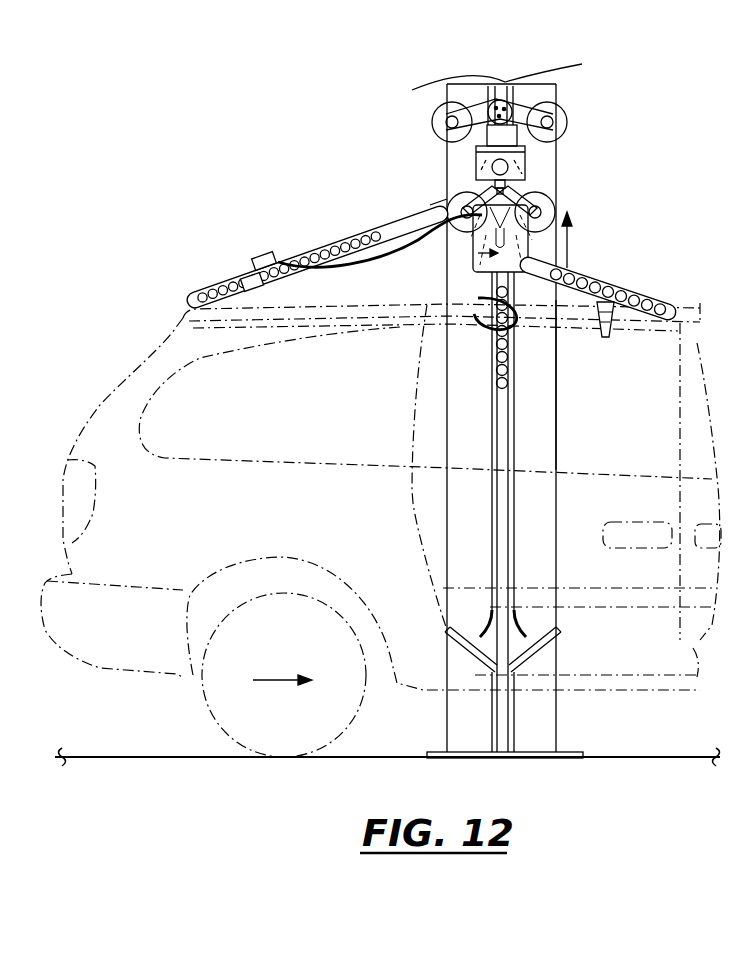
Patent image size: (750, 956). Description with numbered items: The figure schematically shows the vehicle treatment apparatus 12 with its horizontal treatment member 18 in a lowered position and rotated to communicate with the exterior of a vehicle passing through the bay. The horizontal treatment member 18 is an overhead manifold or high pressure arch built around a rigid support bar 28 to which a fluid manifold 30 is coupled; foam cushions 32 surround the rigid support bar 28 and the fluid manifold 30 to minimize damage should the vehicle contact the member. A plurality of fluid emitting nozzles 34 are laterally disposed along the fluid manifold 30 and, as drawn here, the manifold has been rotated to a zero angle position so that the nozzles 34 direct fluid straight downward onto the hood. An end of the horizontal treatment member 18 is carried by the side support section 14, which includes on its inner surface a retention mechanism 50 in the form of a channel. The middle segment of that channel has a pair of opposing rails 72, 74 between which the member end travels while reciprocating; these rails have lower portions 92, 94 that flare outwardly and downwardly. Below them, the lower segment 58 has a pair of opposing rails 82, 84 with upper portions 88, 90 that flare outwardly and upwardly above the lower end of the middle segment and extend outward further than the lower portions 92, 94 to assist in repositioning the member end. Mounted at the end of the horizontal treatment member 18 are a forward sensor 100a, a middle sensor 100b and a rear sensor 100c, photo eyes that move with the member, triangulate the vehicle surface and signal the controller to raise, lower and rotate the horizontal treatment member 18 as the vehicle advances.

The vehicle treatment apparatus 12 is at (552, 177).
The side support section 14 is at (548, 393).
The horizontal treatment member 18 is at (542, 156).
The rigid support bar 28 is at (504, 130).
The fluid manifold 30 is at (512, 172).
The foam cushions 32 is at (442, 113).
The fluid emitting nozzles 34 is at (434, 214).
The retention mechanism 50 is at (534, 440).
The lower segment 58 is at (517, 708).
The opposing rail 72 is at (492, 553).
The opposing rail 74 is at (518, 561).
The opposing rail 82 is at (492, 727).
The opposing rail 84 is at (517, 735).
The upper portion 88 is at (463, 655).
The upper portion 90 is at (553, 652).
The lower portion 92 is at (480, 628).
The lower portion 94 is at (527, 633).
The forward sensor 100a is at (262, 268).
The middle sensor 100b is at (478, 298).
The rear sensor 100c is at (603, 336).